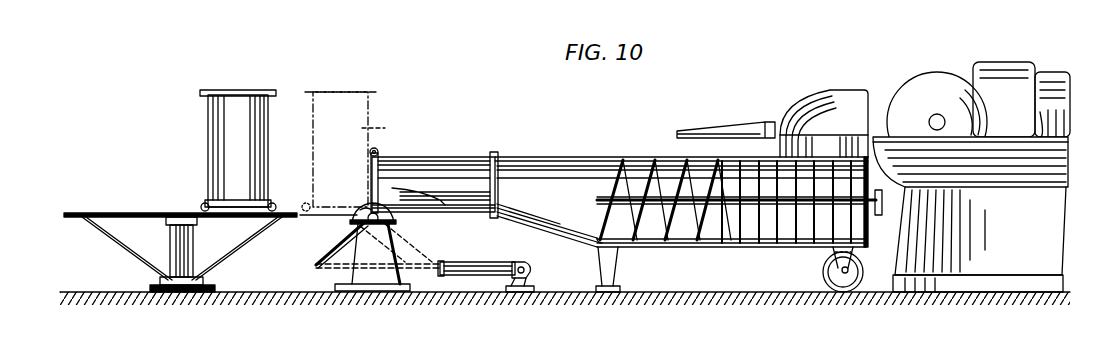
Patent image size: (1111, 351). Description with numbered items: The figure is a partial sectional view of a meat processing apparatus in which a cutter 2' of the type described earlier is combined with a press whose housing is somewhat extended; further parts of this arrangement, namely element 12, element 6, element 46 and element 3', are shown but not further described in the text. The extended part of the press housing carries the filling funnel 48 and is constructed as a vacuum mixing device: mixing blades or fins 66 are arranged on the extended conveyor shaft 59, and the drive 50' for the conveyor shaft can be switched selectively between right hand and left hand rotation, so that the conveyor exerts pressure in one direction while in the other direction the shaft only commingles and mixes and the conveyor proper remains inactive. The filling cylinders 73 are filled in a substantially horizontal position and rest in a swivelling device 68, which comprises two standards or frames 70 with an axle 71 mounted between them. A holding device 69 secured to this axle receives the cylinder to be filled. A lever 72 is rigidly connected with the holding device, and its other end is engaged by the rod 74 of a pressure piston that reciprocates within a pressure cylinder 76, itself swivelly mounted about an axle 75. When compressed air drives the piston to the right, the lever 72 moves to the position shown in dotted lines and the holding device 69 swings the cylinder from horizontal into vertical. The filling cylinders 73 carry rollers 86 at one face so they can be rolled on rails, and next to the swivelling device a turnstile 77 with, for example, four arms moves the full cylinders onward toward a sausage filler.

The turnstile 77 is at (135, 213).
The filling cylinders 73 is at (210, 141).
The rollers 86 is at (304, 203).
The holding device 69 is at (426, 200).
The axle 71 is at (364, 209).
The swivelling device 68 is at (398, 223).
The standards 70 is at (371, 278).
The lever 72 is at (336, 252).
The rod 74 is at (428, 266).
The pressure cylinder 76 is at (476, 258).
The axle 75 is at (529, 270).
The chute 12 is at (535, 226).
The screw conveyor 6 is at (665, 247).
The mixing blades 66 is at (748, 247).
The conveyor shaft 59 is at (781, 247).
The drive 50' is at (860, 241).
The filling funnel 48 is at (826, 96).
The disc 46 is at (912, 85).
The platform 3' is at (982, 162).
The cutter 2' is at (992, 239).